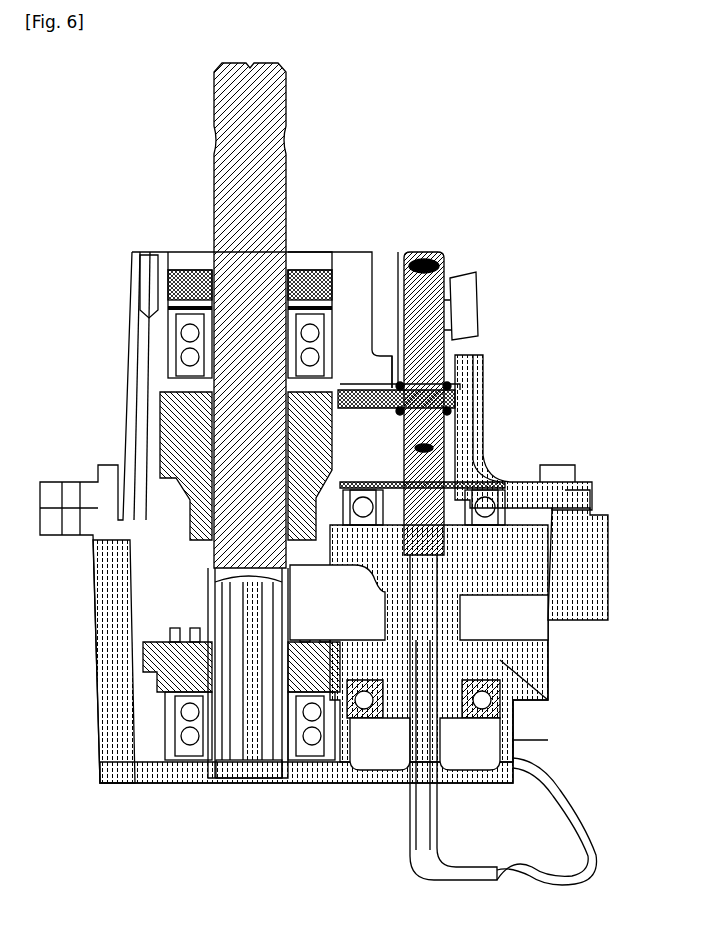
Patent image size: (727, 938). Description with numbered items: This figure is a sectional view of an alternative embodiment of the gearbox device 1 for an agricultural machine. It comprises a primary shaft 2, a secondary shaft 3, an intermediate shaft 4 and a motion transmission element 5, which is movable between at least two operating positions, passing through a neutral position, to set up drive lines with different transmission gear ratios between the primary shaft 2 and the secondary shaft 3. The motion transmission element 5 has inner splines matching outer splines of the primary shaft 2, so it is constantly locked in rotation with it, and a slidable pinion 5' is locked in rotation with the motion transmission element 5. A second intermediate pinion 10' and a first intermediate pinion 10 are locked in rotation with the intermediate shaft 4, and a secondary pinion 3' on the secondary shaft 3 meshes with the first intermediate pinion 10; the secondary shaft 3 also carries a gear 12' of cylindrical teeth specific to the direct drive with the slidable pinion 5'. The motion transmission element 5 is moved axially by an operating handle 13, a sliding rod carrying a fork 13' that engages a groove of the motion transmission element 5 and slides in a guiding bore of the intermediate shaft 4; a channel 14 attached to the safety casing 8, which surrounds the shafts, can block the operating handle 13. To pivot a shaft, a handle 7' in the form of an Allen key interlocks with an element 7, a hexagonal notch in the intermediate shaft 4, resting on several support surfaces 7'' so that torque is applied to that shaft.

The gearbox device 1 is at (406, 160).
The primary shaft 2 is at (246, 168).
The secondary shaft 3 is at (250, 751).
The secondary pinion 3' is at (194, 668).
The intermediate shaft 4 is at (458, 620).
The motion transmission element 5 is at (199, 464).
The slidable pinion 5' is at (285, 661).
The element 7 is at (402, 541).
The handle 7' is at (461, 760).
The support surface 7'' is at (566, 660).
The safety casing 8 is at (503, 470).
The first intermediate pinion 10 is at (556, 731).
The second intermediate pinion 10' is at (590, 524).
The gear specific to the direct drive 12' is at (183, 644).
The operating handle 13 is at (431, 397).
The fork 13' is at (382, 295).
The channel 14 is at (480, 334).